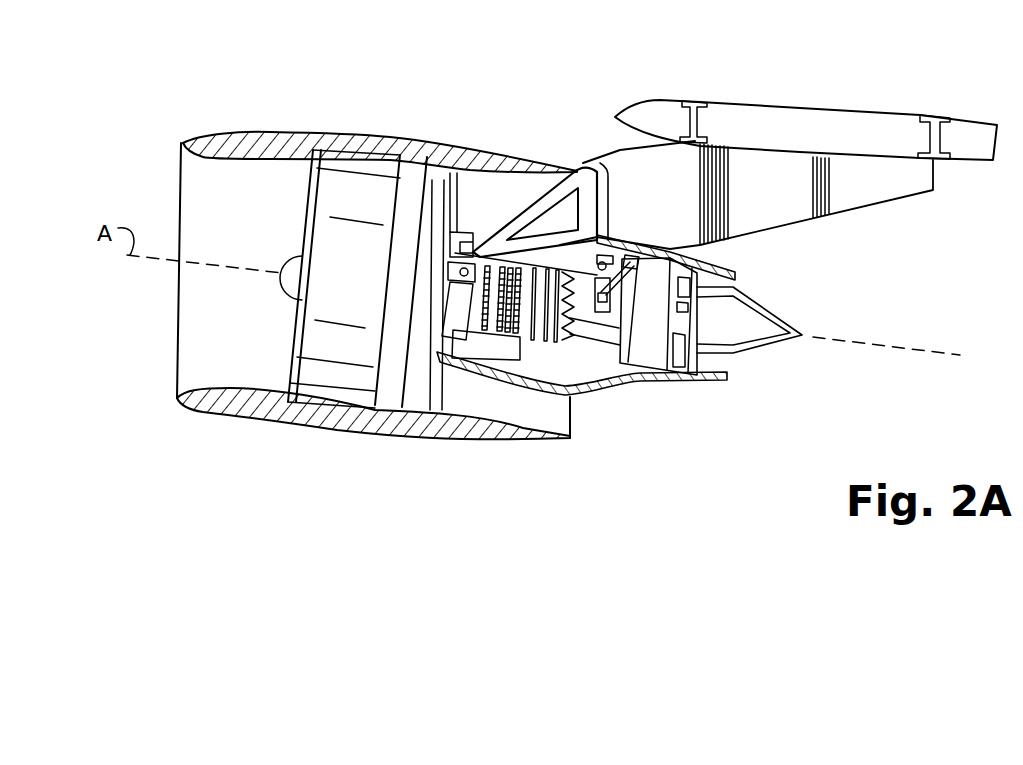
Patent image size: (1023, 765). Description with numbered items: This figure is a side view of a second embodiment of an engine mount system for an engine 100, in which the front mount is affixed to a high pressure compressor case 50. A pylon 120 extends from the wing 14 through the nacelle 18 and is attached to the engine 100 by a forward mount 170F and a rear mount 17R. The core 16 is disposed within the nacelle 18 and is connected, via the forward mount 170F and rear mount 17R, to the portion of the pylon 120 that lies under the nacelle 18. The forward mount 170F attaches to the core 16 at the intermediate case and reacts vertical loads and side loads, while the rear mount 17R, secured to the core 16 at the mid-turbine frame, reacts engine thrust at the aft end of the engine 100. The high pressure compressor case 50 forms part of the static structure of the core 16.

The engine 100 is at (290, 96).
The wing 14 is at (827, 104).
The pylon 120 is at (622, 162).
The forward mount 170F is at (465, 258).
The rear mount 17R is at (615, 262).
The nacelle 18 is at (323, 438).
The high pressure compressor case 50 is at (443, 320).
The core 16 is at (568, 352).